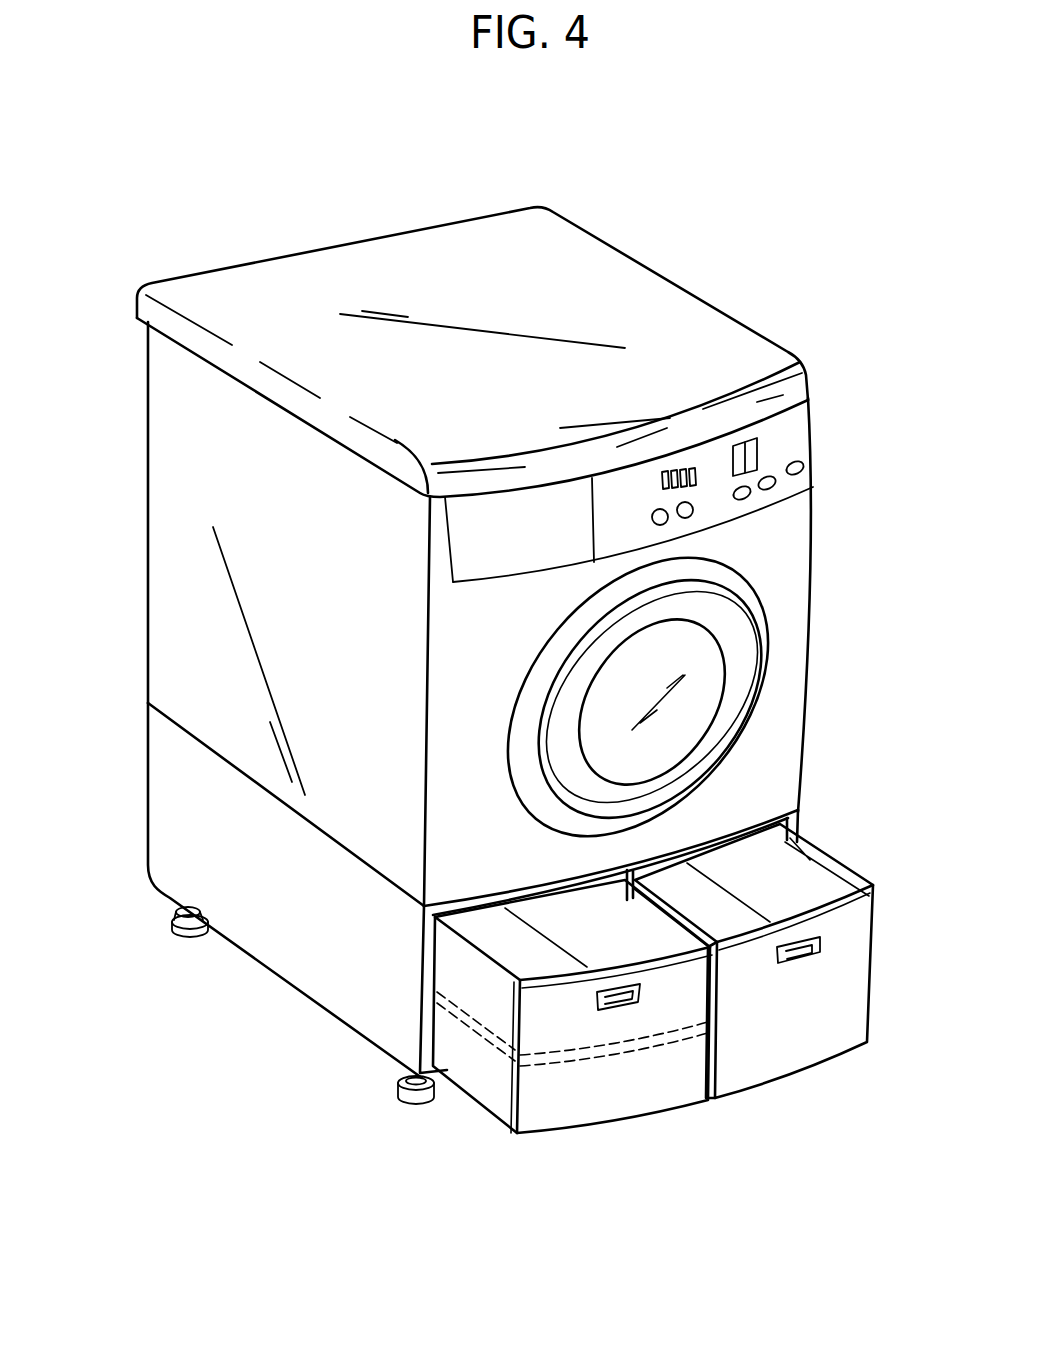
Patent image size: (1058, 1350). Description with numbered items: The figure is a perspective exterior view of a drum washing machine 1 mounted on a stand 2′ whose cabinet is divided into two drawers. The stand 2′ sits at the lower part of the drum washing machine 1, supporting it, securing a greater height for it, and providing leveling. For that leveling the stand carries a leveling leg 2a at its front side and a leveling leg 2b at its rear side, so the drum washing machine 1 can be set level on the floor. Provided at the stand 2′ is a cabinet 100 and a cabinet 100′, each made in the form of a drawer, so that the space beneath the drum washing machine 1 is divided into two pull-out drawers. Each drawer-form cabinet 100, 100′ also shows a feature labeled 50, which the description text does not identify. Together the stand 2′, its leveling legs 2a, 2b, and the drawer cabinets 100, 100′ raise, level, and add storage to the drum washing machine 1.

The drum washing machine 1 is at (810, 637).
The stand 2′ is at (141, 787).
The leveling leg 2a is at (403, 1098).
The leveling leg 2b is at (180, 932).
The handle 50 is at (613, 999).
The cabinet 100 is at (860, 982).
The cabinet 100′ is at (622, 1105).